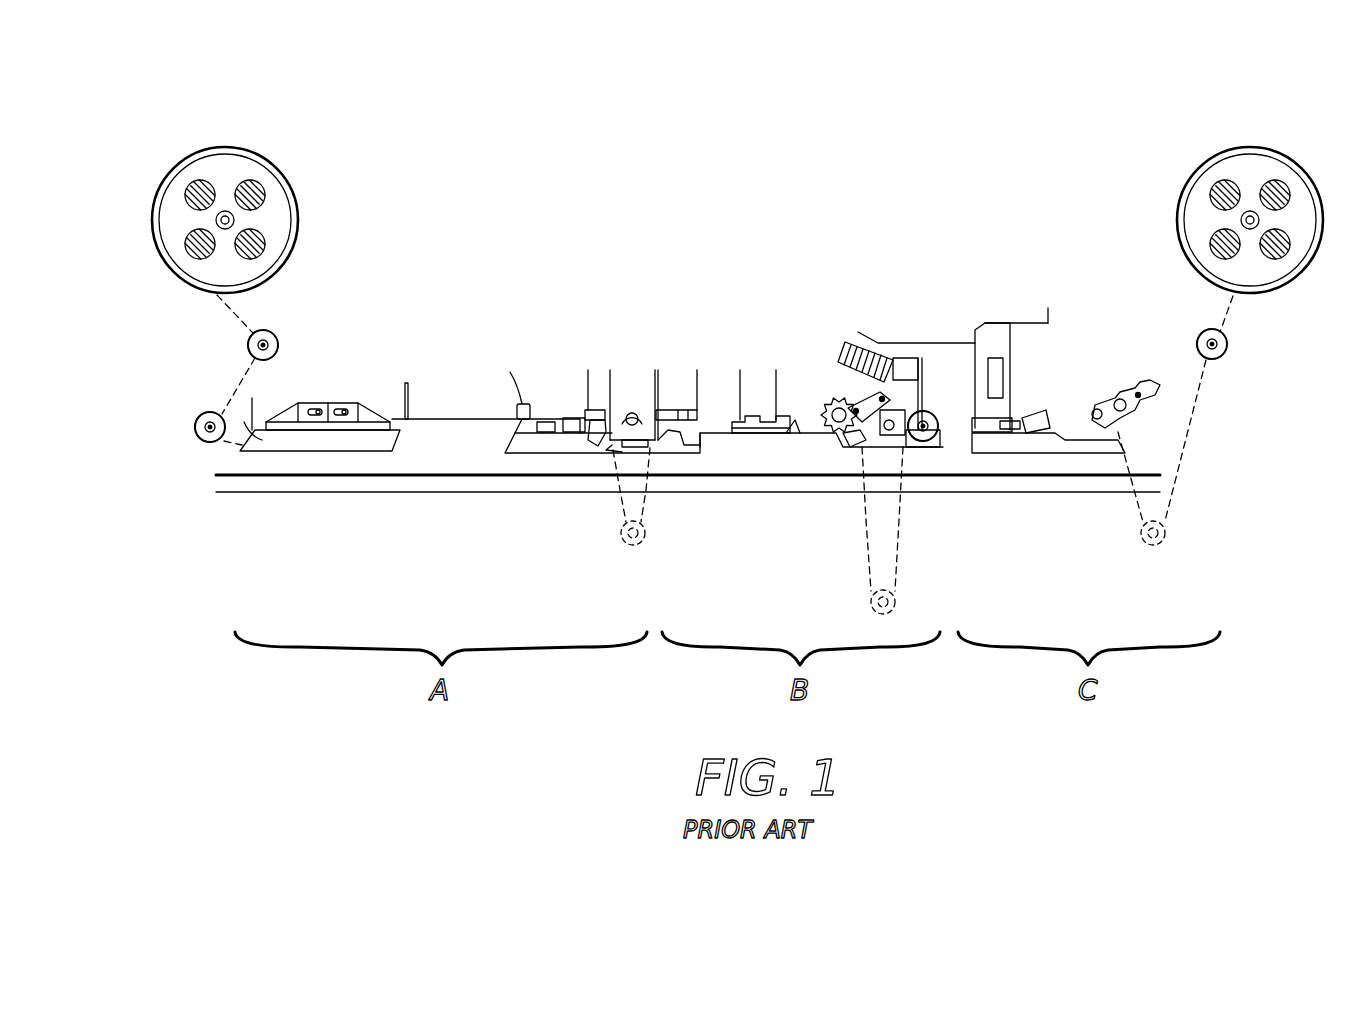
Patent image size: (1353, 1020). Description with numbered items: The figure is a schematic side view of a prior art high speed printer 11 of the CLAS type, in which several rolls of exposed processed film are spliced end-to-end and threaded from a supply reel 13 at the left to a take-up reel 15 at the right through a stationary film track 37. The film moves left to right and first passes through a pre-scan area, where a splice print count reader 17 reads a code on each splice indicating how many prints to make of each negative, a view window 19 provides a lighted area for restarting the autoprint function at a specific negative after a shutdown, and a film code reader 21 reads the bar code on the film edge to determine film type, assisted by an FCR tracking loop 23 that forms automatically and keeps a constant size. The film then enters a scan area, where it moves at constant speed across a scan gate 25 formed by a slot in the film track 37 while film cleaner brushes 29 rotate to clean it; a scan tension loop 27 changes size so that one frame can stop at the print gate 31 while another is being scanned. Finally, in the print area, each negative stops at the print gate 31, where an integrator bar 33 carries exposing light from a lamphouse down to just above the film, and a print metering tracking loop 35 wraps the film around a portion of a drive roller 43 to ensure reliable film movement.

The high speed printer 11 is at (746, 150).
The supply reel 13 is at (242, 148).
The take-up reel 15 is at (1254, 148).
The splice print count reader 17 is at (333, 403).
The view window 19 is at (543, 420).
The film code reader 21 is at (593, 447).
The FCR tracking loop 23 is at (645, 530).
The scan gate 25 is at (728, 420).
The scan tension loop 27 is at (865, 552).
The film cleaner brushes 29 is at (912, 400).
The print gate 31 is at (982, 437).
The integrator bar 33 is at (992, 348).
The print metering tracking loop 35 is at (1185, 455).
The film track 37 is at (258, 440).
The drive roller 43 is at (1107, 395).